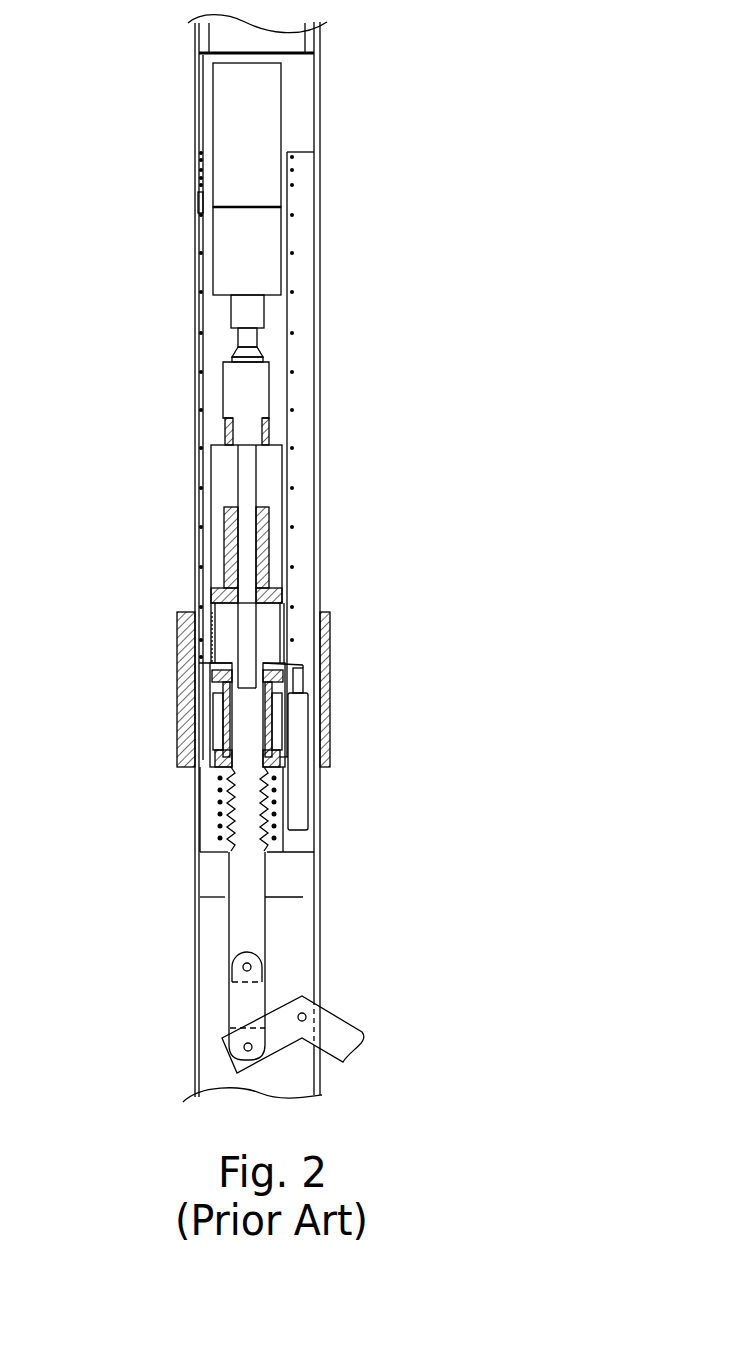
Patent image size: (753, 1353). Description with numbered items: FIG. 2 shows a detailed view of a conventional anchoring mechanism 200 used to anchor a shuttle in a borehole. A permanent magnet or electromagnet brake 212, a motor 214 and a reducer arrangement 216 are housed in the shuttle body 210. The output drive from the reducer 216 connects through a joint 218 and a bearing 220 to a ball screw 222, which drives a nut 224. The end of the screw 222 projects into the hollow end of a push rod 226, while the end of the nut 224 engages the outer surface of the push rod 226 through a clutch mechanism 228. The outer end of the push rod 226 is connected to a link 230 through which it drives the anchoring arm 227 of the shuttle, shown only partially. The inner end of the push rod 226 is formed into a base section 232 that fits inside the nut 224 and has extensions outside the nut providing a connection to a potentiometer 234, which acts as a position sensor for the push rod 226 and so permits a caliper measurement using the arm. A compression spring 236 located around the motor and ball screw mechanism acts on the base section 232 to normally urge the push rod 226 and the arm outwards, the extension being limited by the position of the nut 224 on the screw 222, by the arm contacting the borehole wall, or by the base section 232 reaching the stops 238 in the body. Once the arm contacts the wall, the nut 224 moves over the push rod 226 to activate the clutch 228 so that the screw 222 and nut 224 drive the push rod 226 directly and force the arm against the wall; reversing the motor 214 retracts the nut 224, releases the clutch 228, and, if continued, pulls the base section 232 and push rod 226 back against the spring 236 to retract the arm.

The anchoring mechanism 200 is at (377, 1153).
The shuttle body 210 is at (318, 323).
The brake 212 is at (287, 113).
The motor 214 is at (287, 170).
The reducer arrangement 216 is at (285, 248).
The joint 218 is at (225, 308).
The bearing 220 is at (223, 397).
The ball screw 222 is at (240, 483).
The nut 224 is at (266, 532).
The push rod 226 is at (266, 920).
The anchoring arm 227 is at (342, 1025).
The clutch mechanism 228 is at (293, 740).
The link 230 is at (240, 1008).
The base section 232 is at (293, 666).
The potentiometer 234 is at (313, 813).
The compression spring 236 is at (300, 442).
The stops 238 is at (200, 682).